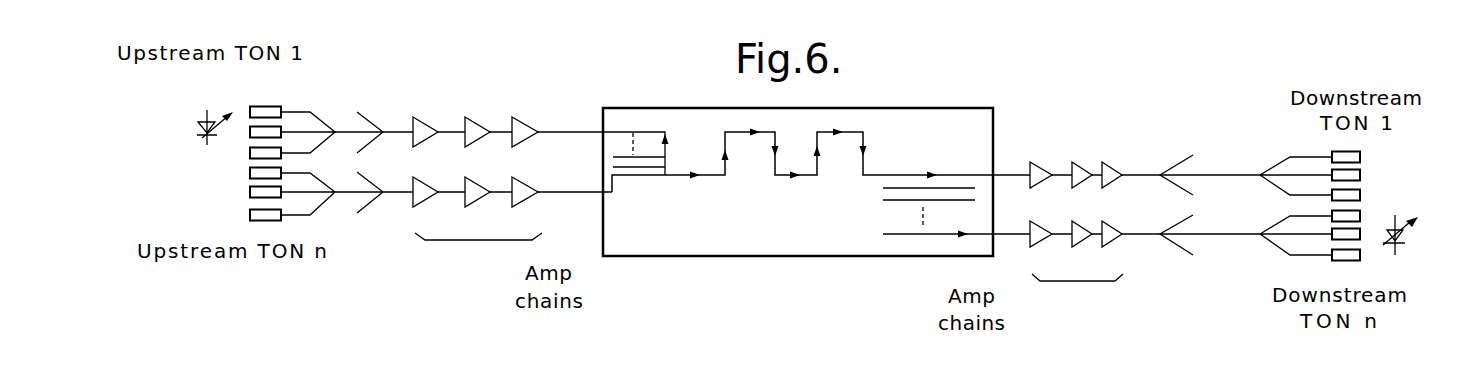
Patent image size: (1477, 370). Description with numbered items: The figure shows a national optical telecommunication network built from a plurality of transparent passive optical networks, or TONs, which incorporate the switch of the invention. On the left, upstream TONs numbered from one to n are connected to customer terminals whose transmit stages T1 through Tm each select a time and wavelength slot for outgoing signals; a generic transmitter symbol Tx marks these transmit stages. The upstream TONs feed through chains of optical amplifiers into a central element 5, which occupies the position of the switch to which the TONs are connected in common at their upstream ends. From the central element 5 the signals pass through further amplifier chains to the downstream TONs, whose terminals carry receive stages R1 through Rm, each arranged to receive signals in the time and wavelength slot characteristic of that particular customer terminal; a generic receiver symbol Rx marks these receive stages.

The optical switching/routing unit 5 is at (760, 247).
The transmit stage T1 is at (264, 108).
The transmit stage Tm is at (258, 154).
The transmitter laser source Tx is at (184, 129).
The receive stage R1 is at (1362, 158).
The receive stage Rm is at (1362, 197).
The receiver photodetector Rx is at (1419, 236).